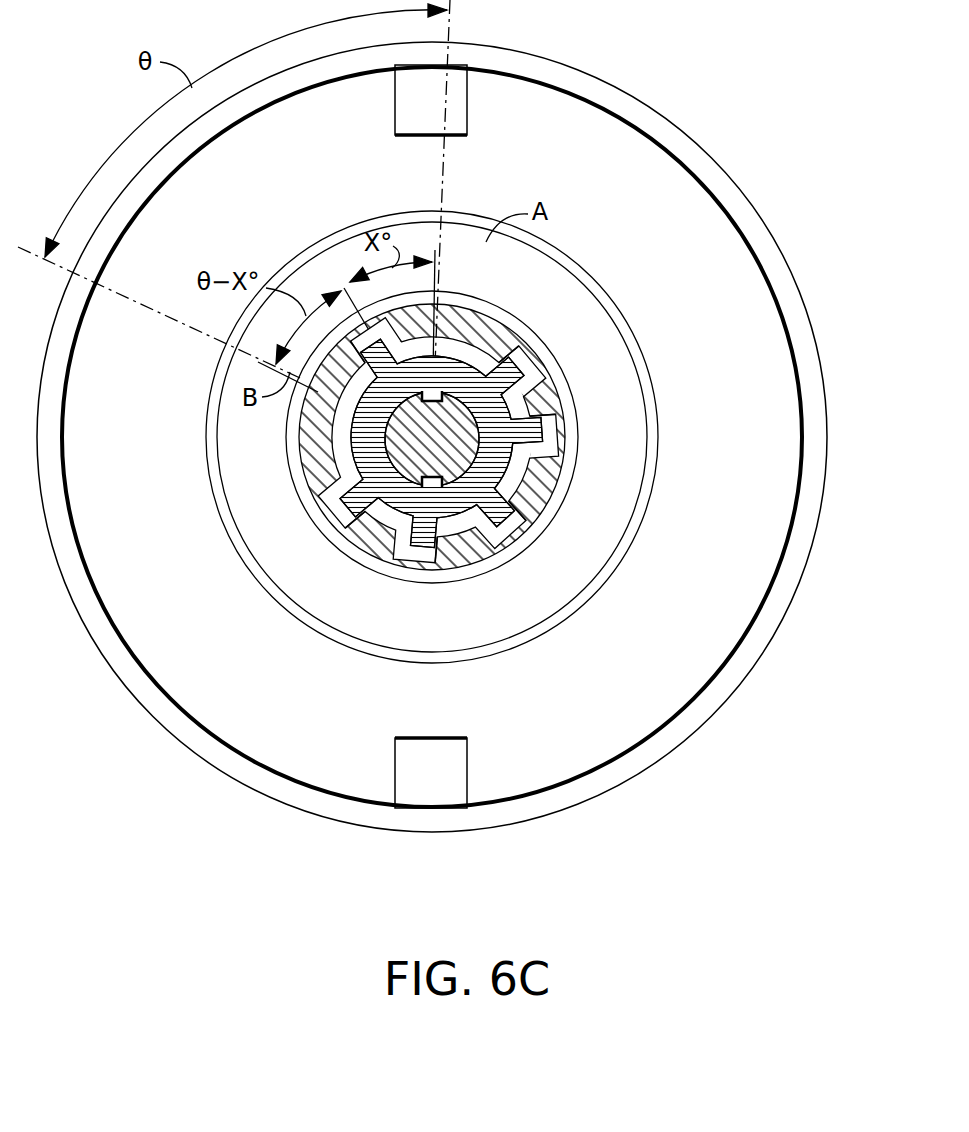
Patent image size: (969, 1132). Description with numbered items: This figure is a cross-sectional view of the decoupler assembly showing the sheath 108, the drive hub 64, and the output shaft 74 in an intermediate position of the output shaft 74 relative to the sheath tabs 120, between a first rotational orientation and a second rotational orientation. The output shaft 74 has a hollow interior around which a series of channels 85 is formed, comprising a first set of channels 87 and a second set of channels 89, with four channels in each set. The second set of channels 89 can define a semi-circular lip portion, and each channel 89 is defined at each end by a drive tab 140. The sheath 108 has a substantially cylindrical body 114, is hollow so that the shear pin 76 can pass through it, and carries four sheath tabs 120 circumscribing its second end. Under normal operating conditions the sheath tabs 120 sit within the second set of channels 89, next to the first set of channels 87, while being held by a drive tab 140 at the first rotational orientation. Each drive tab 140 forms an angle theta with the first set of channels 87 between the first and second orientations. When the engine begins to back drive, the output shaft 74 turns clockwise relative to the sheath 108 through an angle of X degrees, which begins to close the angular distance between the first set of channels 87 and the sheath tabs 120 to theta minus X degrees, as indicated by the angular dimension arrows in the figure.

The drive hub 64 is at (650, 748).
The output shaft 74 is at (445, 432).
The shear pin 76 is at (435, 432).
The series of channels 85 is at (237, 420).
The first set of channels 87 is at (472, 338).
The second set of channels 89 is at (338, 455).
The sheath 108 is at (470, 437).
The cylindrical body 114 is at (437, 515).
The sheath tabs 120 is at (450, 325).
The drive tab 140 is at (466, 318).